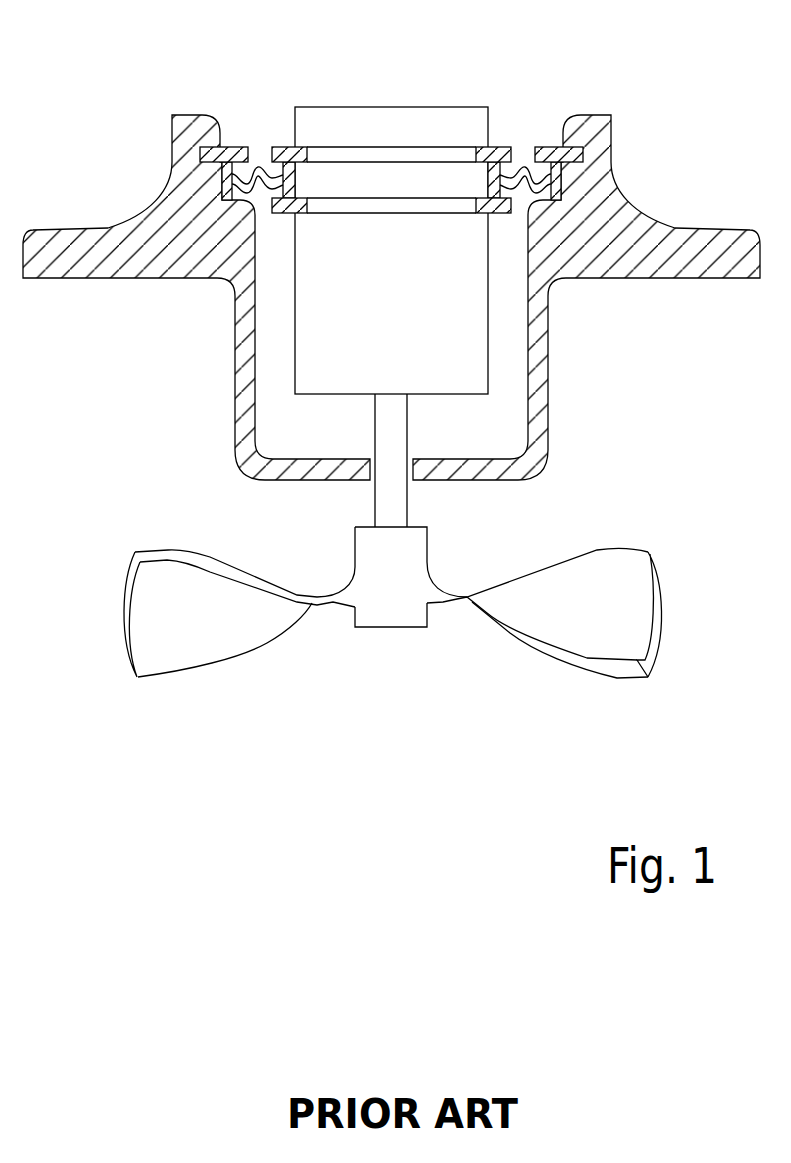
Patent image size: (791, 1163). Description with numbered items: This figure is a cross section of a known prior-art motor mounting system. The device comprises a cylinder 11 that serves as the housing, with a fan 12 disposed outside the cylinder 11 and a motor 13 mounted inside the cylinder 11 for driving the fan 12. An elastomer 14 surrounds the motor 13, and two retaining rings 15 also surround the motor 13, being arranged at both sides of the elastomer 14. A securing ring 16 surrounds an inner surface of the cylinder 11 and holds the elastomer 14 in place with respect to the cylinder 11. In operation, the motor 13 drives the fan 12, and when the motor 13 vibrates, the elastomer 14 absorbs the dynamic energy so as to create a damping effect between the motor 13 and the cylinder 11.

The cylinder 11 is at (548, 378).
The fan 12 is at (557, 668).
The motor 13 is at (388, 107).
The elastomer 14 is at (522, 163).
The retaining rings 15 is at (278, 147).
The securing ring 16 is at (213, 147).